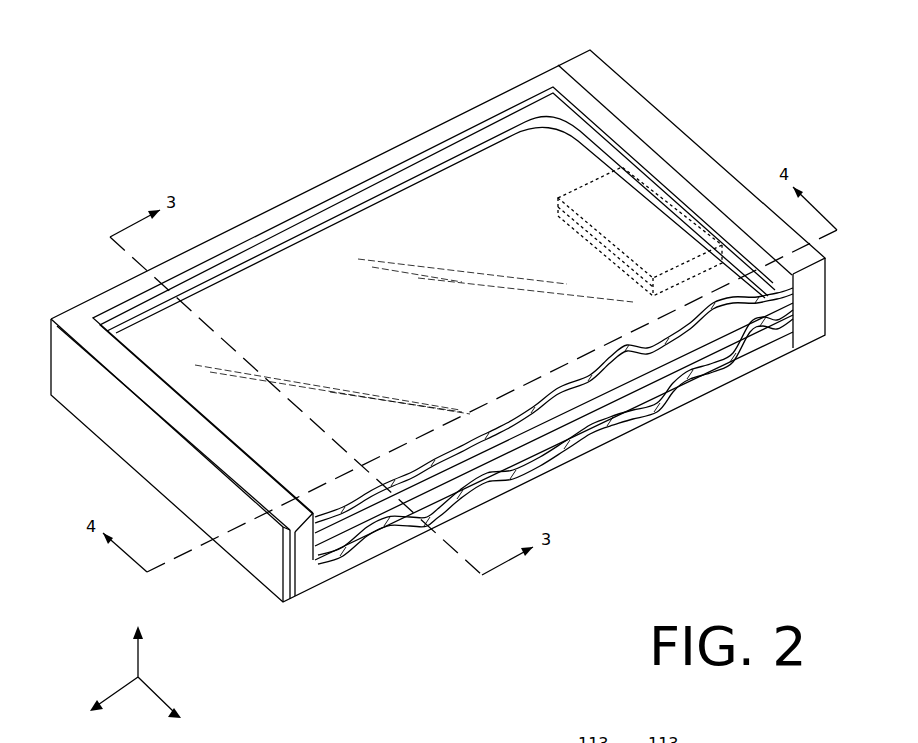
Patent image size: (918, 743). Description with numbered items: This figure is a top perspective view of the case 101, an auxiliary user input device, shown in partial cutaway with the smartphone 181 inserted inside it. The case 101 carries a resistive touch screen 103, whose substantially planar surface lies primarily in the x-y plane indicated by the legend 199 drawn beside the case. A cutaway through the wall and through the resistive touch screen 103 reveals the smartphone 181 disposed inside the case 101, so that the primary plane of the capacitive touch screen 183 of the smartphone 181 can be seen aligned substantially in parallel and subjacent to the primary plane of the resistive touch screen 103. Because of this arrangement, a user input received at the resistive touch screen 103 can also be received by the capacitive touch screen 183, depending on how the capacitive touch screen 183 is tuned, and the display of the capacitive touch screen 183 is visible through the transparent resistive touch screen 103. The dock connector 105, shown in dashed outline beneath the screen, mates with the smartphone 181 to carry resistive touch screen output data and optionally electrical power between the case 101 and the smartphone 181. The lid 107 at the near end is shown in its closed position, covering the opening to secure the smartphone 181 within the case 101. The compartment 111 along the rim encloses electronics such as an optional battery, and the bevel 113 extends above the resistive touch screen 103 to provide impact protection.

The case 101 is at (224, 110).
The resistive touch screen 103 is at (413, 329).
The dock connector 105 is at (595, 208).
The lid 107 is at (272, 570).
The compartment 111 is at (587, 67).
The bevel 113 is at (518, 95).
The smartphone 181 is at (717, 358).
The capacitive touch screen 183 is at (633, 358).
The legend 199 is at (111, 672).